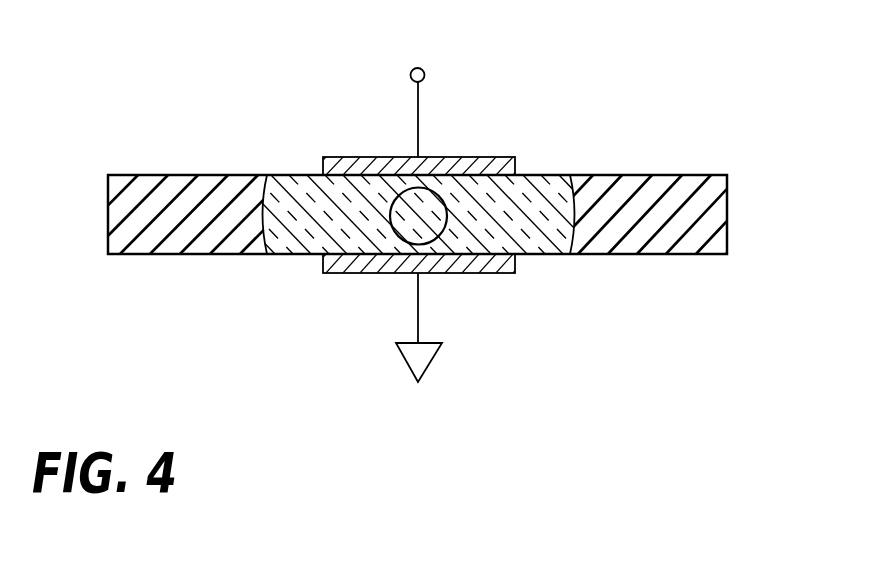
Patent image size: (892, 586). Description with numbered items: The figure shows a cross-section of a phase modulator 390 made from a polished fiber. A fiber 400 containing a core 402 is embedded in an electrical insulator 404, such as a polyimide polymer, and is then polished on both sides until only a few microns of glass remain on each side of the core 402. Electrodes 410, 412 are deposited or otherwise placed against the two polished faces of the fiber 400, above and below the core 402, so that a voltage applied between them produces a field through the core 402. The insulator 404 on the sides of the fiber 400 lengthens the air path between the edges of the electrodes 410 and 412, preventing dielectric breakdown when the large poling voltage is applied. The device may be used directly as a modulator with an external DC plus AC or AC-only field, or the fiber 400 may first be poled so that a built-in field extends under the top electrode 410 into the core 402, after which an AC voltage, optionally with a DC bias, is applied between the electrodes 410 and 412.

The phase modulator 390 is at (672, 70).
The fiber 400 is at (558, 247).
The core 402 is at (410, 195).
The electrical insulator 404 is at (172, 249).
The electrode 410 is at (489, 157).
The electrode 412 is at (357, 267).